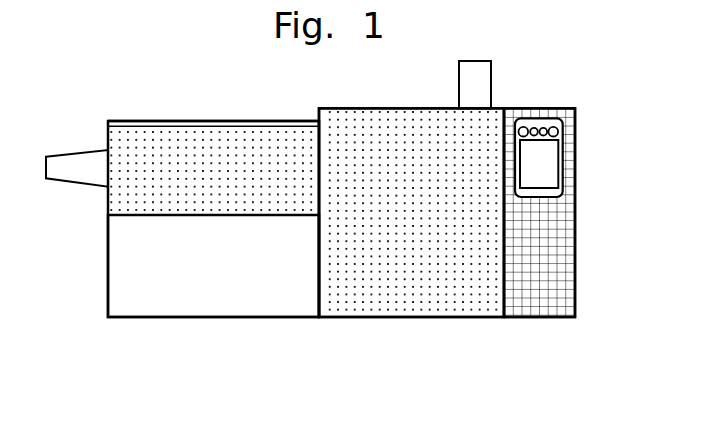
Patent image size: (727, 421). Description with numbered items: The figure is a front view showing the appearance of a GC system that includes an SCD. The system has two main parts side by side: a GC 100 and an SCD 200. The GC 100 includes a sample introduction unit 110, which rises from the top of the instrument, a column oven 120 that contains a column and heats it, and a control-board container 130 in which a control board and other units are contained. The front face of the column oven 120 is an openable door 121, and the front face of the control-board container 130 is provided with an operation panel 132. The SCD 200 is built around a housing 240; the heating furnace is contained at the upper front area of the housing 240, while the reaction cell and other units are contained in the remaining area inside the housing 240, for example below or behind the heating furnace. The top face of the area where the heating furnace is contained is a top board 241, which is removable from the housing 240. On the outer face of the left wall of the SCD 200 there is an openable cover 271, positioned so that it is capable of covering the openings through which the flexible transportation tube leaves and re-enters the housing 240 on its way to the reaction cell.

The GC 100 is at (574, 363).
The sample introduction unit 110 is at (491, 93).
The column oven 120 is at (323, 322).
The openable door 121 is at (373, 118).
The control-board container 130 is at (574, 322).
The operation panel 132 is at (565, 158).
The SCD 200 is at (45, 364).
The housing 240 is at (107, 243).
The top board 241 is at (204, 118).
The cover 271 is at (71, 153).